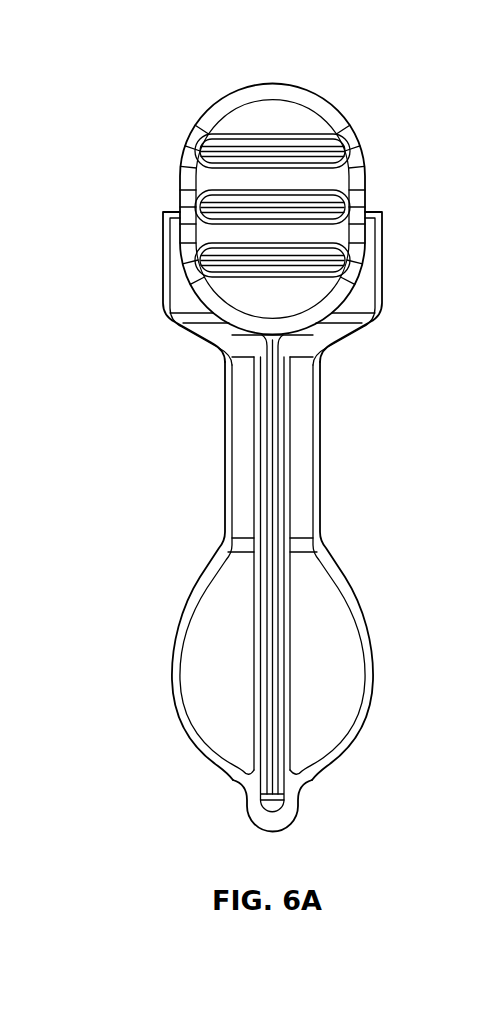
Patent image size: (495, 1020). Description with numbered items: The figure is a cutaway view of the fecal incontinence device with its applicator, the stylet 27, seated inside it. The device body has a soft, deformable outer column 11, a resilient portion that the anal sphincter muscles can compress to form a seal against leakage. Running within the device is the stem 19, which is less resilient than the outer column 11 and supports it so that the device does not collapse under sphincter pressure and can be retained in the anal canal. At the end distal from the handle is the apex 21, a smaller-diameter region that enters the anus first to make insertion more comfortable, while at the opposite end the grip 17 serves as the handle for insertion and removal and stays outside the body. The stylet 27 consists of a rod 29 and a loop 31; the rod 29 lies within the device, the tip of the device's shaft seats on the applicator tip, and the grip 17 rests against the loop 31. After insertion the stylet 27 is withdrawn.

The outer column 11 is at (225, 410).
The grip 17 is at (162, 268).
The stem 19 is at (260, 482).
The apex 21 is at (250, 808).
The stylet 27 is at (365, 185).
The rod 29 is at (283, 682).
The loop 31 is at (283, 83).